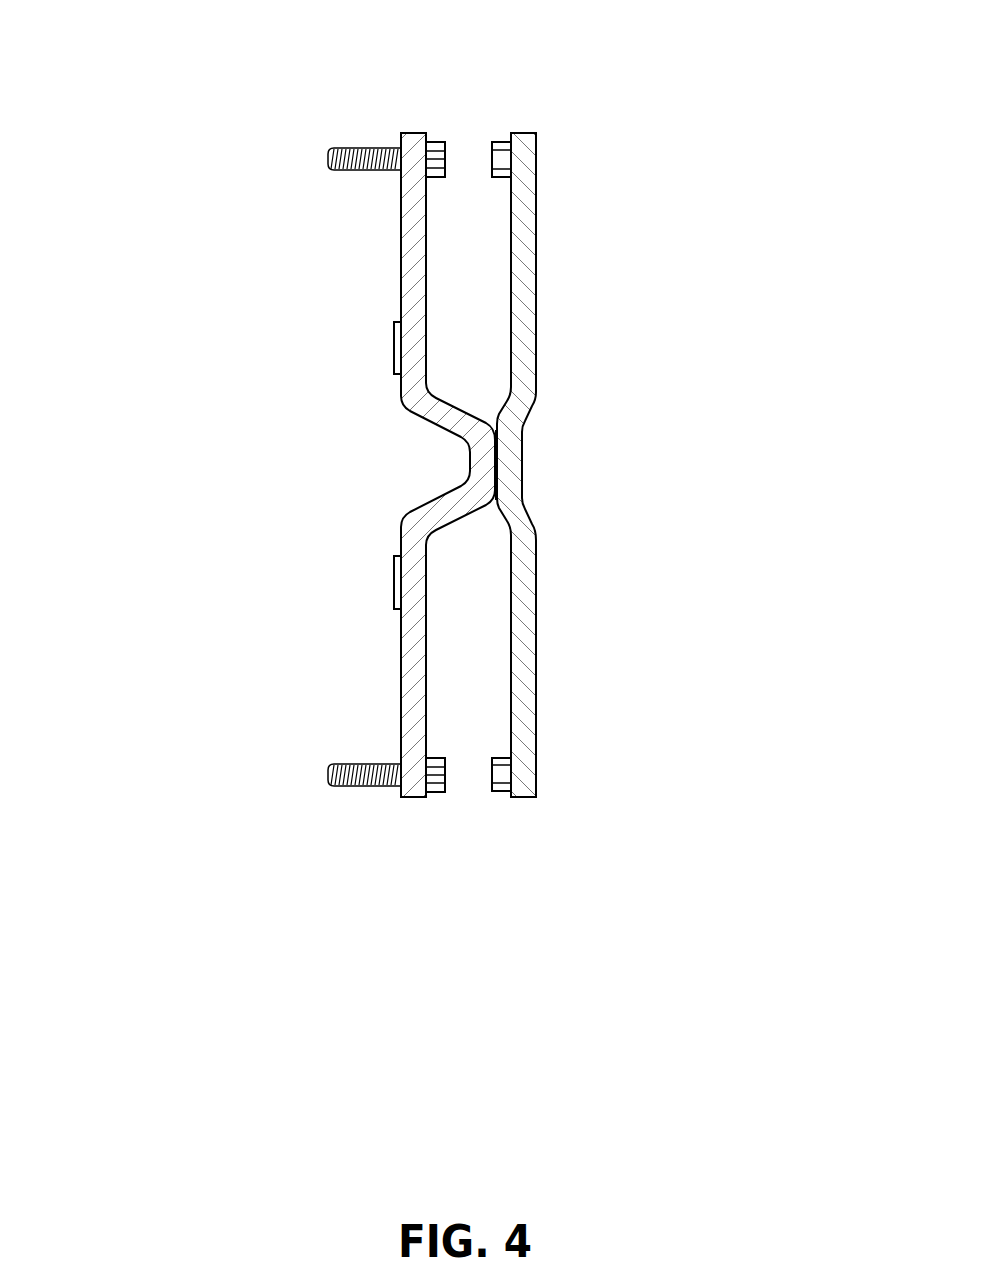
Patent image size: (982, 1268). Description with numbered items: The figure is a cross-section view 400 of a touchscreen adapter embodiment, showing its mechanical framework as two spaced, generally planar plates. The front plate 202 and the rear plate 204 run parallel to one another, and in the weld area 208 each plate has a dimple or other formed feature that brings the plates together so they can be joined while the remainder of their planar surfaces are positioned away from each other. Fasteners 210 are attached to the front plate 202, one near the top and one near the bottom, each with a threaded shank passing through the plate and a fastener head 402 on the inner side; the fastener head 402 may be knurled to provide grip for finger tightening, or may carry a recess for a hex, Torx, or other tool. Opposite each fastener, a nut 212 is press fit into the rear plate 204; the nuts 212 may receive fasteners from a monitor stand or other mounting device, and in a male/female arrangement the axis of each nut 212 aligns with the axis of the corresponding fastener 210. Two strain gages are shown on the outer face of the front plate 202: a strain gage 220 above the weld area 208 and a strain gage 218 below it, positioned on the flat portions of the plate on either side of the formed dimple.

The front plate 202 is at (400, 700).
The rear plate 204 is at (536, 657).
The weld area 208 is at (497, 465).
The fastener 210 is at (320, 491).
The nut 212 is at (555, 860).
The strain gage 218 is at (318, 543).
The strain gage 220 is at (394, 357).
The cross-section view 400 is at (472, 571).
The fastener head 402 is at (438, 792).